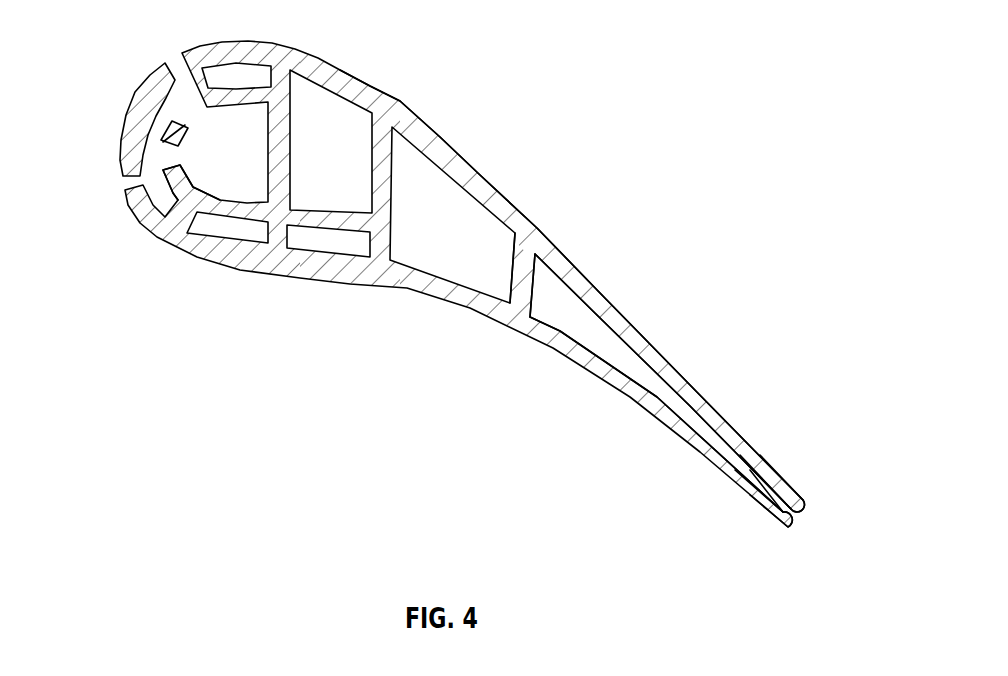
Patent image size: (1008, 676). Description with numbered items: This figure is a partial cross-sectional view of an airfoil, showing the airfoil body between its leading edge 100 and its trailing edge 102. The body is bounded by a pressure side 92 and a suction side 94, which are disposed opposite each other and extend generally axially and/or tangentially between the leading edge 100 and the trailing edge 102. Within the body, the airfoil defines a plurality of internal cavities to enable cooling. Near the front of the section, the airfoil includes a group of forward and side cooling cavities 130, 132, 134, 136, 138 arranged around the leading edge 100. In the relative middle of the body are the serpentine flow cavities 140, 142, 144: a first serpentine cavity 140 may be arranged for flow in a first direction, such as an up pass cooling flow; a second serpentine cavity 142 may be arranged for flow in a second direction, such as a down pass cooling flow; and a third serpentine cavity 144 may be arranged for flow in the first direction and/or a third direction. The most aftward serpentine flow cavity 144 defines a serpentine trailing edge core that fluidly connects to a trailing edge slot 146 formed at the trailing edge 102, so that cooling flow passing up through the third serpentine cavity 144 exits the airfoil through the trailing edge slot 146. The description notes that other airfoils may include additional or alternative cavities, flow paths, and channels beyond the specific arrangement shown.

The leading edge 100 is at (120, 121).
The pressure side 92 is at (523, 321).
The suction side 94 is at (463, 159).
The trailing edge 102 is at (800, 508).
The forward and side cooling cavity 130 is at (233, 234).
The forward and side cooling cavity 132 is at (325, 241).
The forward and side cooling cavity 134 is at (146, 170).
The forward and side cooling cavity 136 is at (256, 73).
The forward and side cooling cavity 138 is at (252, 118).
The first serpentine cavity 140 is at (327, 101).
The second serpentine cavity 142 is at (475, 223).
The third serpentine cavity 144 is at (568, 298).
The trailing edge slot 146 is at (801, 521).